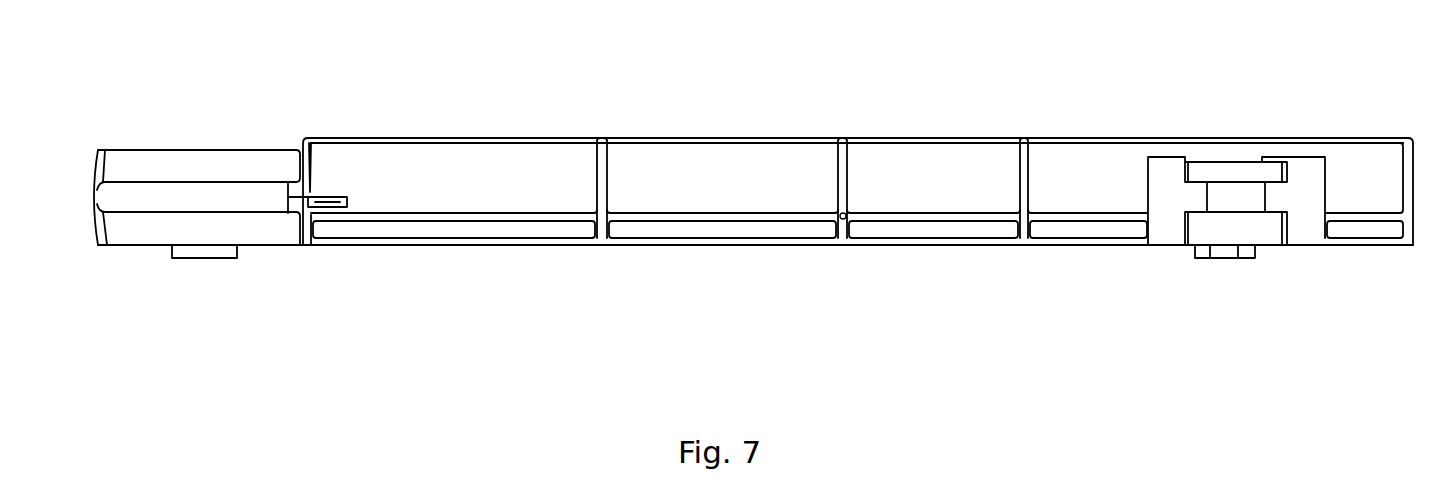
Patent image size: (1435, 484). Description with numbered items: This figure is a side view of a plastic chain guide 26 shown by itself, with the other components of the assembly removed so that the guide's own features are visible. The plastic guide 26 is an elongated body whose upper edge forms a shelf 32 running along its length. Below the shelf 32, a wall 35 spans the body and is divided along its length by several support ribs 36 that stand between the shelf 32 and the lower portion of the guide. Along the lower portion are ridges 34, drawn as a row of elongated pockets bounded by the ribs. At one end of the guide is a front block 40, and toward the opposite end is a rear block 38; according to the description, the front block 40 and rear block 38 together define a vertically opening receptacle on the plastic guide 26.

The plastic guide 26 is at (465, 108).
The shelf 32 is at (692, 138).
The ridges 34 is at (450, 217).
The wall 35 is at (647, 188).
The support ribs 36 is at (597, 172).
The rear block 38 is at (1163, 235).
The front block 40 is at (263, 232).